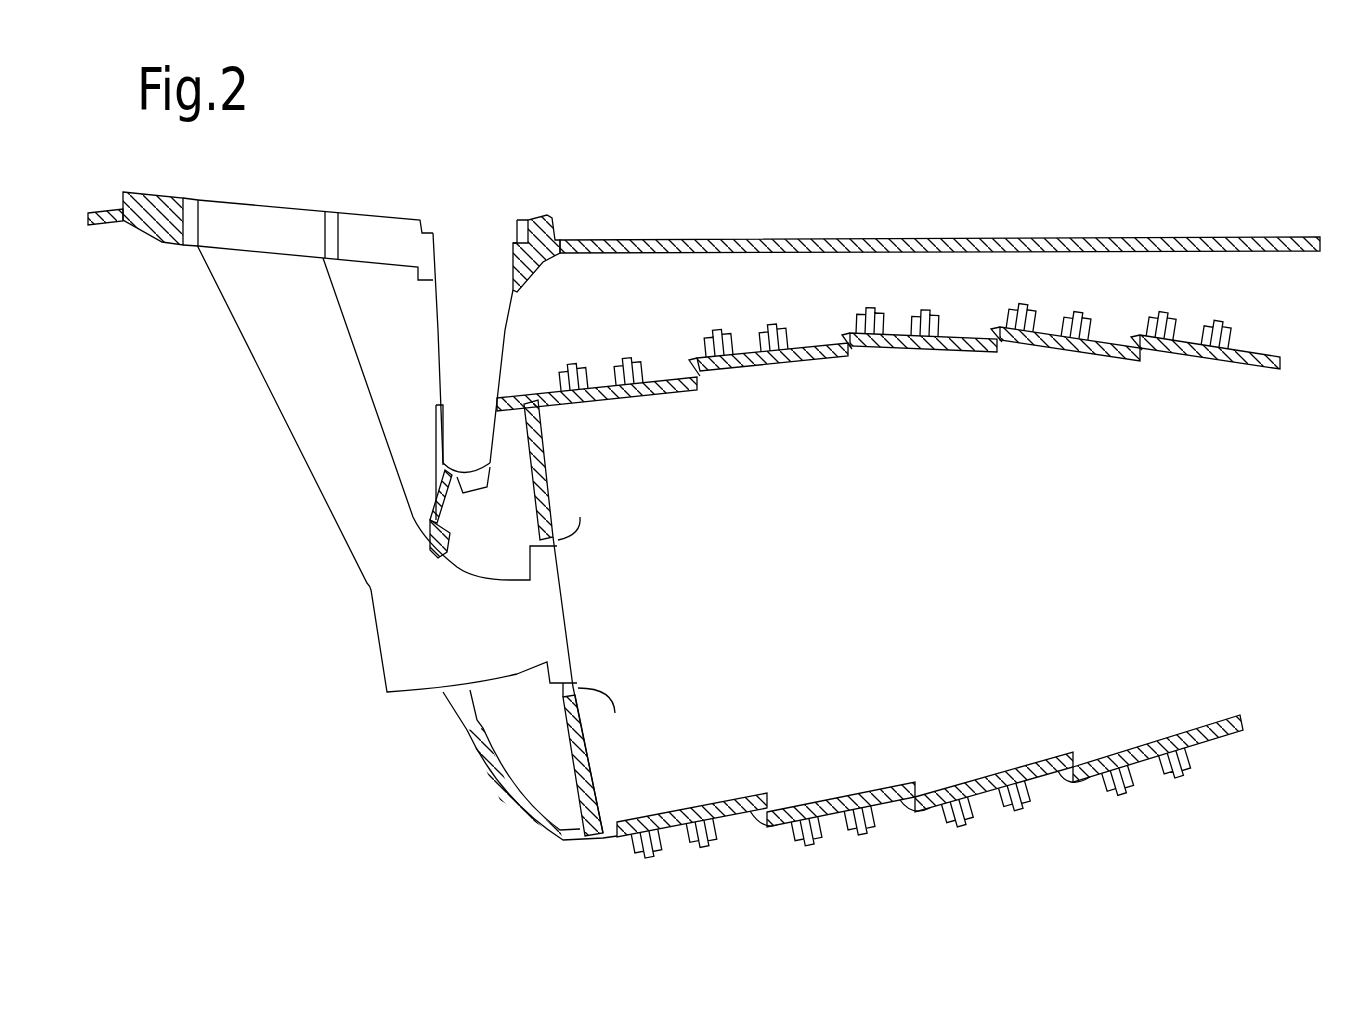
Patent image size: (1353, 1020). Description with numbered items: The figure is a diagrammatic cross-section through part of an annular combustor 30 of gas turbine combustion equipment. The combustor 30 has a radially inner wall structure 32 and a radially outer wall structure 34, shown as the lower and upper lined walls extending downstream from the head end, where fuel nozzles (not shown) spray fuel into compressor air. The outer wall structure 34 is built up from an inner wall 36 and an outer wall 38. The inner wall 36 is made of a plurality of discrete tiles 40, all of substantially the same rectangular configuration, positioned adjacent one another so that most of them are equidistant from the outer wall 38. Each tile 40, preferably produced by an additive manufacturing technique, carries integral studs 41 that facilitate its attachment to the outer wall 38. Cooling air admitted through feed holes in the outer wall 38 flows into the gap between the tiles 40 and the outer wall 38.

The annular combustor 30 is at (854, 189).
The radially inner wall structure 32 is at (737, 837).
The radially outer wall structure 34 is at (888, 361).
The inner wall 36 is at (1042, 358).
The outer wall 38 is at (981, 318).
The tiles 40 is at (888, 362).
The studs 41 is at (781, 322).